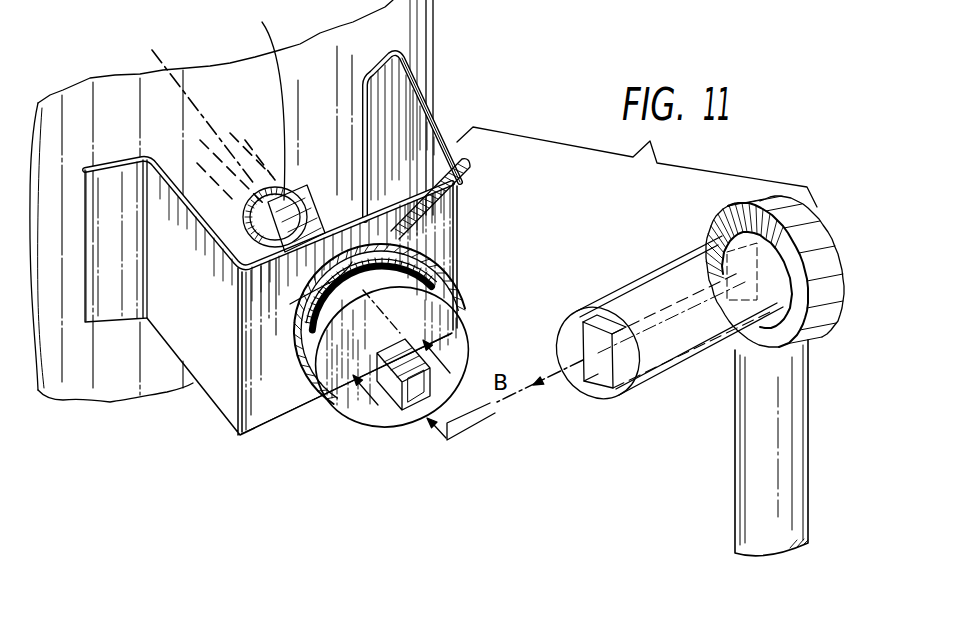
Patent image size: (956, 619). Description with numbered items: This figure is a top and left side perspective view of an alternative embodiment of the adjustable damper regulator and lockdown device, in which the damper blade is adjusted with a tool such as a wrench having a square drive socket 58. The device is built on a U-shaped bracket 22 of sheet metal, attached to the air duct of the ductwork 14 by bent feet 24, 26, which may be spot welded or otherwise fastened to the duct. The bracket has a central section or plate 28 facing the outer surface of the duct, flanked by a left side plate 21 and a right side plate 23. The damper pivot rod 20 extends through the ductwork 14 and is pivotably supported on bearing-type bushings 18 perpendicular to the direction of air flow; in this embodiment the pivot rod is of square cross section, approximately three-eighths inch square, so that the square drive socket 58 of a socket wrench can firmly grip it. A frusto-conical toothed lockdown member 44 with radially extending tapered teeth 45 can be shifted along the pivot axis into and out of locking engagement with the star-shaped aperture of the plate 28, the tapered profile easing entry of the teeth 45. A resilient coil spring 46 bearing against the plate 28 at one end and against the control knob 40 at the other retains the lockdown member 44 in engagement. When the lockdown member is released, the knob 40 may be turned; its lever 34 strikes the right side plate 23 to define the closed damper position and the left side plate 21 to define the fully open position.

The duct 14 is at (254, 104).
The bushings 18 is at (261, 103).
The damper pivot rod 20 is at (300, 233).
The left side plate 21 is at (204, 309).
The U-shaped bracket 22 is at (192, 391).
The right side plate 23 is at (432, 143).
The bent foot 24 is at (110, 318).
The bent foot 26 is at (397, 82).
The central section plate 28 is at (290, 400).
The lever 34 is at (466, 170).
The control knob 40 is at (437, 342).
The toothed lockdown member 44 is at (408, 277).
The tapered teeth 45 is at (290, 304).
The coil spring 46 is at (400, 245).
The square drive socket 58 is at (690, 352).